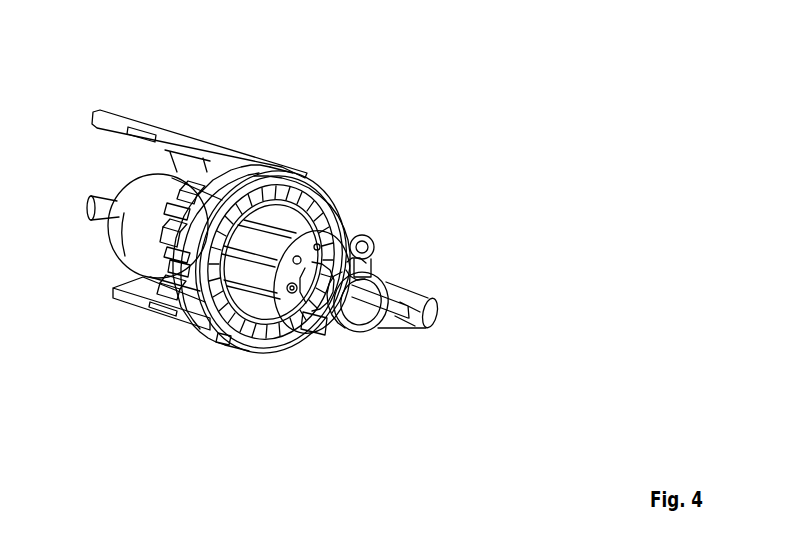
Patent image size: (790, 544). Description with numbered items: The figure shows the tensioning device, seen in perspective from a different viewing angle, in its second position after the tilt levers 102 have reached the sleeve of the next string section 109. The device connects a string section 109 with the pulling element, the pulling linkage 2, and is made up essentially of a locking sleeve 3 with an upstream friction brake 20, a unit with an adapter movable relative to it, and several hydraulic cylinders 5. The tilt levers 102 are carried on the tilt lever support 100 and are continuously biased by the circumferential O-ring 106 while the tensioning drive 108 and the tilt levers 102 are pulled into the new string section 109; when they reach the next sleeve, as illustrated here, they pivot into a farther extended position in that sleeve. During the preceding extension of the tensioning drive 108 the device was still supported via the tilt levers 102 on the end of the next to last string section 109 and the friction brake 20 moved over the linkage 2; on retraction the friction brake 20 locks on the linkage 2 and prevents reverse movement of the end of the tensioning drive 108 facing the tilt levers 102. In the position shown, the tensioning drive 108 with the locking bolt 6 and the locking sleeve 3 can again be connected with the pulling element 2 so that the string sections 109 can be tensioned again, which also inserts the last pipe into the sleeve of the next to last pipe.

The tilt lever support 100 is at (313, 185).
The tilt levers 102 is at (247, 168).
The circumferential O-ring 106 is at (335, 195).
The tensioning drive 108 is at (351, 231).
The string section 109 is at (152, 127).
The locking bolt 6 is at (375, 248).
The friction brake 20 is at (360, 283).
The pulling linkage 2 is at (436, 316).
The locking sleeve 3 is at (310, 335).
The hydraulic cylinders 5 is at (224, 343).